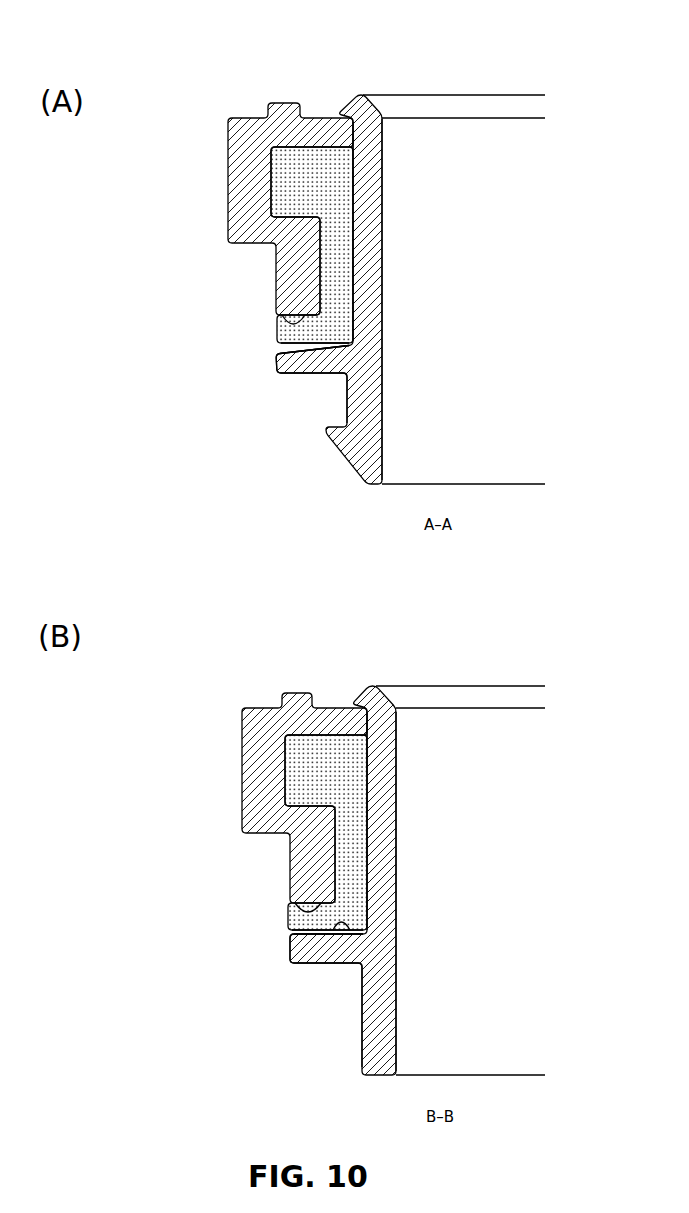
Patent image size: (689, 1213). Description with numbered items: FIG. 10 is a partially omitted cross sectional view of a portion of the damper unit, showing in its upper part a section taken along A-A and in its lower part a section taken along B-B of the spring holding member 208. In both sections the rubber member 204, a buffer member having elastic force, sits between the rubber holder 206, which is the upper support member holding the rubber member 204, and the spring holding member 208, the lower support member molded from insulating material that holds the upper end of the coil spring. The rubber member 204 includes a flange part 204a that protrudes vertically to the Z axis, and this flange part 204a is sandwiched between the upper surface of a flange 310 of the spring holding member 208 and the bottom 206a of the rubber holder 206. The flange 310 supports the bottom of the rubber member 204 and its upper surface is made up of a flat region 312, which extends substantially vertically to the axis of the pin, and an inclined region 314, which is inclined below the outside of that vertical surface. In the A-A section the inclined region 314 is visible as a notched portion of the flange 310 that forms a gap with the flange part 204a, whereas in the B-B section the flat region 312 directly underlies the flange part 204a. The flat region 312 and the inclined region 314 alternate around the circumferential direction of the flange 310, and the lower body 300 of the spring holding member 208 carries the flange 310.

The rubber member 204 is at (356, 178).
The flange part 204a is at (335, 344).
The rubber holder 206 is at (246, 117).
The bottom of the rubber holder 206a is at (287, 323).
The spring holding member 208 is at (383, 255).
The body 300 is at (340, 452).
The flange 310 is at (311, 374).
The flat region 312 is at (342, 918).
The inclined region 314 is at (335, 343).